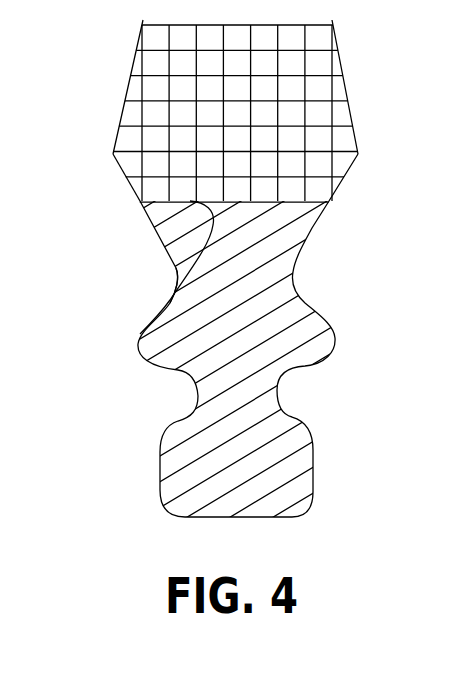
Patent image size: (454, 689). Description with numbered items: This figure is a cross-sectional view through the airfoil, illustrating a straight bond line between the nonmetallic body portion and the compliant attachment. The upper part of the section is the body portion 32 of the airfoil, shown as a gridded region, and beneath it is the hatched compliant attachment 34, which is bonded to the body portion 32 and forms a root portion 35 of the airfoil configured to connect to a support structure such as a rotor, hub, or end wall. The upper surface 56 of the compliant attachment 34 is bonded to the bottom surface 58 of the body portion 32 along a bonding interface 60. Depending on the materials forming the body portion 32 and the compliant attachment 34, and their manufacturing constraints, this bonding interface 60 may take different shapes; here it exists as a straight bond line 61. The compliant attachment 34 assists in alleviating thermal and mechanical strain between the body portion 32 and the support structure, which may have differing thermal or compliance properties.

The body portion 32 is at (335, 95).
The compliant attachment 34 is at (282, 318).
The root portion 35 is at (278, 348).
The upper surface 56 is at (165, 198).
The bottom surface 58 is at (190, 201).
The bonding interface 60 is at (318, 205).
The straight bond line 61 is at (138, 335).